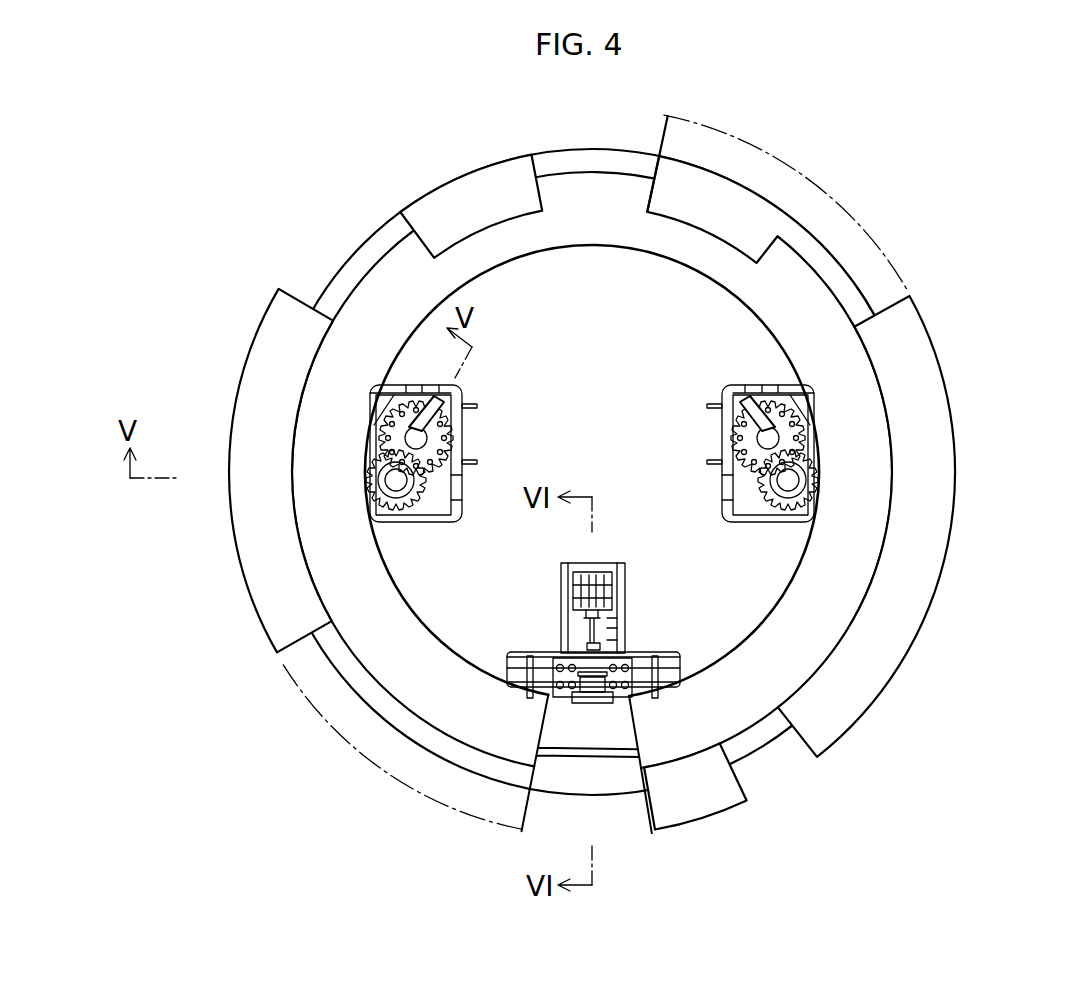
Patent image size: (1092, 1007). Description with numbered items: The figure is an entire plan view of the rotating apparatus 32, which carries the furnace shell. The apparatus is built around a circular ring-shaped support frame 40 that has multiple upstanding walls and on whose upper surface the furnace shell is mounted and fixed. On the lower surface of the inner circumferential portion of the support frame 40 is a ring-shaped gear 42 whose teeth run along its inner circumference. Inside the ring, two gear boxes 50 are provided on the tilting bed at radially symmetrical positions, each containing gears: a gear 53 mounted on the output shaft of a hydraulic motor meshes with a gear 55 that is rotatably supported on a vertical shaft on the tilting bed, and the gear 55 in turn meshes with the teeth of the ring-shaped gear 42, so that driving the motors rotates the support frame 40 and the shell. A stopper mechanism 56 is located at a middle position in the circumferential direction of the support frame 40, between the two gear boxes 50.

The rotating apparatus 32 is at (972, 354).
The circular ring-shaped support frame 40 is at (793, 173).
The ring-shaped gear 42 is at (601, 247).
The gear box 50 is at (777, 521).
The gear 53 is at (800, 421).
The gear 55 is at (818, 481).
The stopper mechanism 56 is at (640, 636).